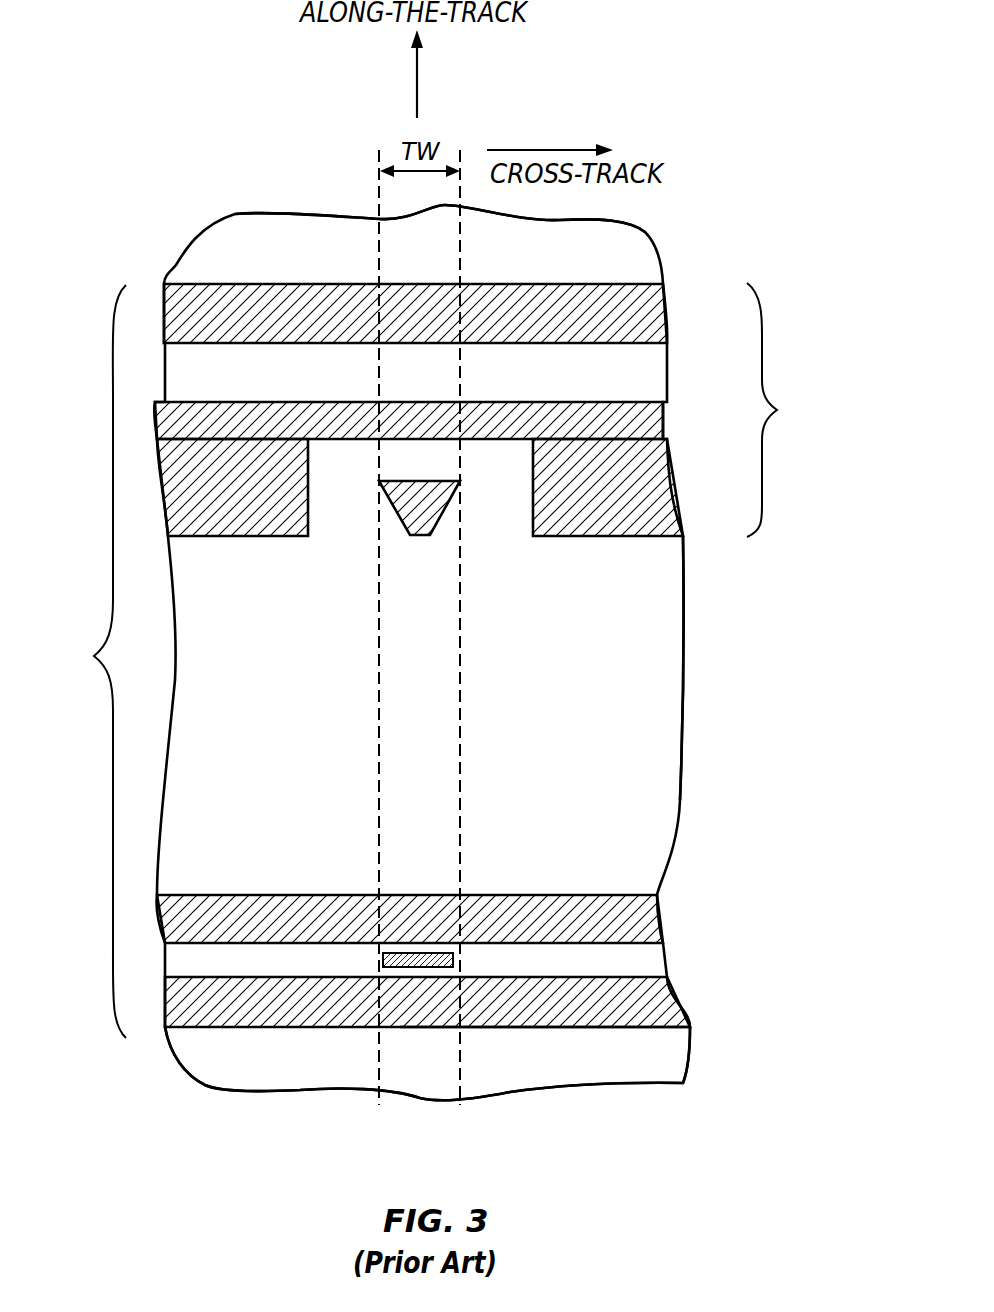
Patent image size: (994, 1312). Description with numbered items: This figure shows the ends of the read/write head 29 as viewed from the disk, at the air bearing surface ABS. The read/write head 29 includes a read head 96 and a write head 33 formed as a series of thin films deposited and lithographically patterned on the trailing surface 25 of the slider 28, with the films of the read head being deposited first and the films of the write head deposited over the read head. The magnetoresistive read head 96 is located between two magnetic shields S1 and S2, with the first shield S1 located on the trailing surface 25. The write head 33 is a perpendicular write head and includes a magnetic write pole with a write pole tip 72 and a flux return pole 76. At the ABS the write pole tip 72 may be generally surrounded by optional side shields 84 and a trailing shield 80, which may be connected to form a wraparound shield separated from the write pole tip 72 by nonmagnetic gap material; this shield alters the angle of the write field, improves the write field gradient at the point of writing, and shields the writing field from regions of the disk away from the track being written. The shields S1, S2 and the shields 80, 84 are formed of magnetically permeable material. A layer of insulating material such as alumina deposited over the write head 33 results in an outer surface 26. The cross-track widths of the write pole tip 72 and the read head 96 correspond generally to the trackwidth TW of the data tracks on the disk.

The outer surface 26 is at (630, 245).
The flux return pole 76 is at (632, 300).
The trailing shield 80 is at (650, 418).
The side shields 84 is at (232, 518).
The write pole tip 72 is at (422, 527).
The read head 96 is at (453, 960).
The first shield S1 is at (650, 998).
The second shield S2 is at (640, 923).
The trailing surface 25 is at (535, 1027).
The slider 28 is at (680, 1055).
The read/write head 29 is at (91, 661).
The write head 33 is at (783, 410).
The air bearing surface ABS is at (660, 676).
The trackwidth TW is at (420, 171).